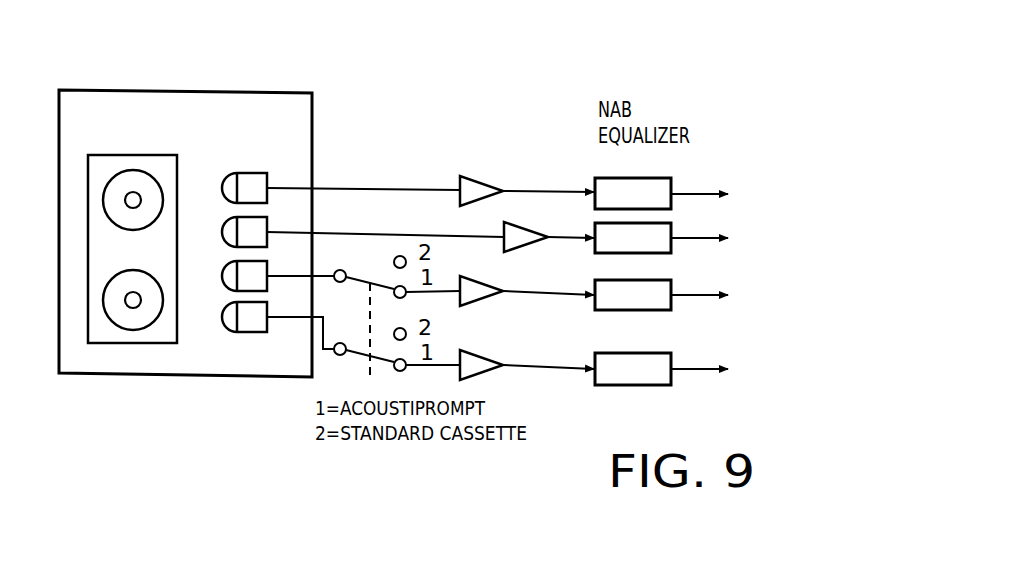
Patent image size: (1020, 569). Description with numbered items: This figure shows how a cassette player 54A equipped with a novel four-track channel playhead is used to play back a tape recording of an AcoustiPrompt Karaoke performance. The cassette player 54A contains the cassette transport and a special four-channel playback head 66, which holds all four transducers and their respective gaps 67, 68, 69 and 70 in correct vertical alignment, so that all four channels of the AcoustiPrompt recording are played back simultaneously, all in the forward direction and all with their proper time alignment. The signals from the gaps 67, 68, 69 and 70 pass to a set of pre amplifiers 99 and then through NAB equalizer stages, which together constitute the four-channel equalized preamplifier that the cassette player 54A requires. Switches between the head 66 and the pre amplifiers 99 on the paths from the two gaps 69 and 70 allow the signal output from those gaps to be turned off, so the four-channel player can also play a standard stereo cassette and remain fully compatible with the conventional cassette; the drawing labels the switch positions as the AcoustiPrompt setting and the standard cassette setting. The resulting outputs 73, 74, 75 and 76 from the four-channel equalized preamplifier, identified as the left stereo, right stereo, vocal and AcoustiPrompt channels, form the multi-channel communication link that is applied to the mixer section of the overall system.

The cassette player 54A is at (140, 88).
The four-channel playback head 66 is at (309, 100).
The transducer gap 67 is at (267, 196).
The transducer gap 68 is at (267, 240).
The transducer gap 69 is at (267, 284).
The transducer gap 70 is at (262, 332).
The pre amplifiers 99 is at (505, 118).
The four-channel equalized preamplifier output 73 is at (693, 191).
The output 74 is at (693, 238).
The output 75 is at (693, 292).
The output 76 is at (693, 367).